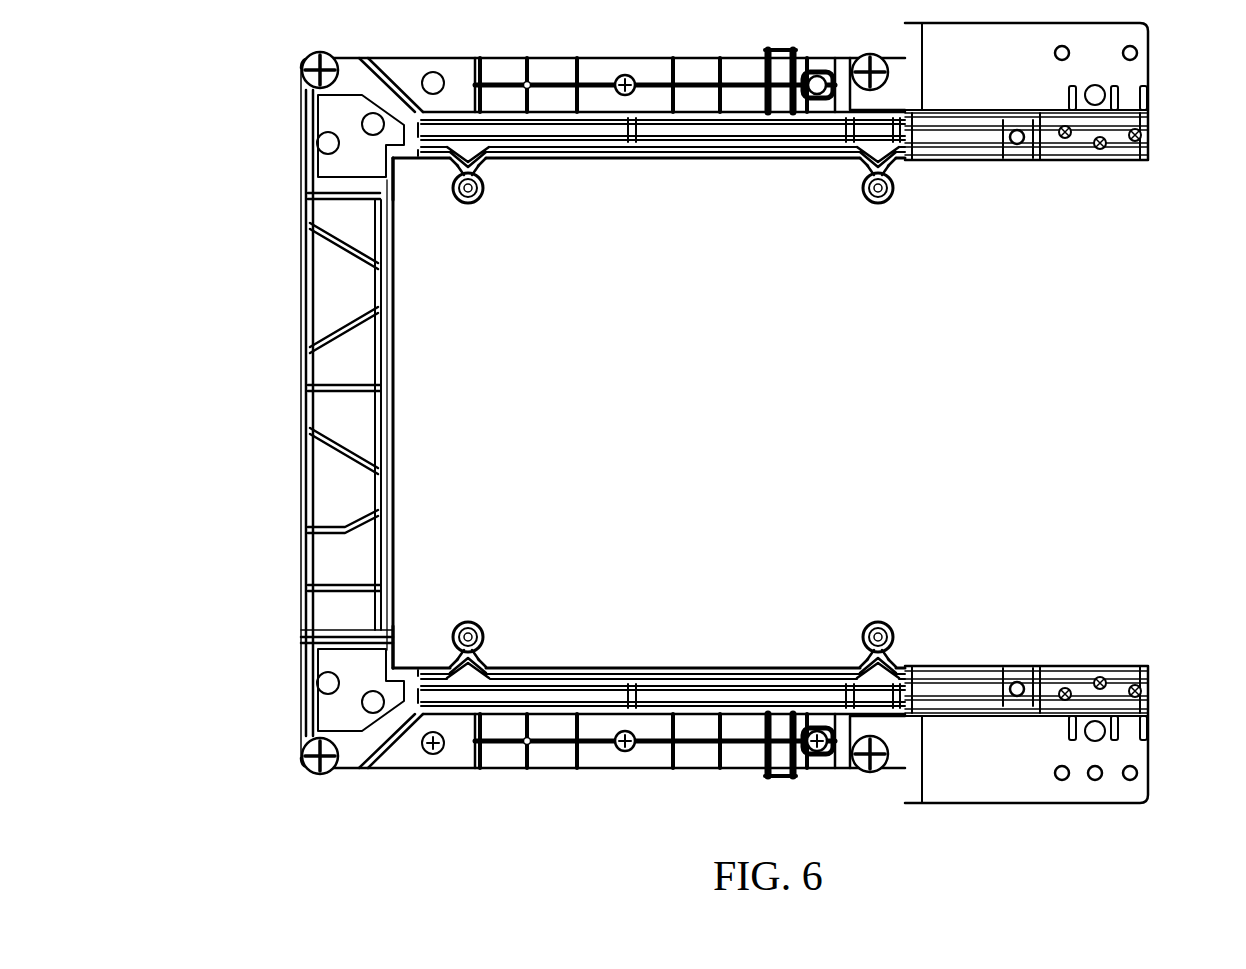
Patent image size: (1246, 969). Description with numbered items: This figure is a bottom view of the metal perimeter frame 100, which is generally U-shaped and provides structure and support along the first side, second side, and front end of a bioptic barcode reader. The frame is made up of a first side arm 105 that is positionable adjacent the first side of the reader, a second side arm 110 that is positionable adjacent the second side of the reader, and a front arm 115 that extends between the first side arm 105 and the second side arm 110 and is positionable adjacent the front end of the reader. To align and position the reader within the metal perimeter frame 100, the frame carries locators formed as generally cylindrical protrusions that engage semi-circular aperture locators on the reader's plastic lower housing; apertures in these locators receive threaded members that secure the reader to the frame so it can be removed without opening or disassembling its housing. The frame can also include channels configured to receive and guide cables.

The metal perimeter frame 100 is at (158, 100).
The first side arm 105 is at (680, 58).
The second side arm 110 is at (699, 770).
The front arm 115 is at (300, 388).